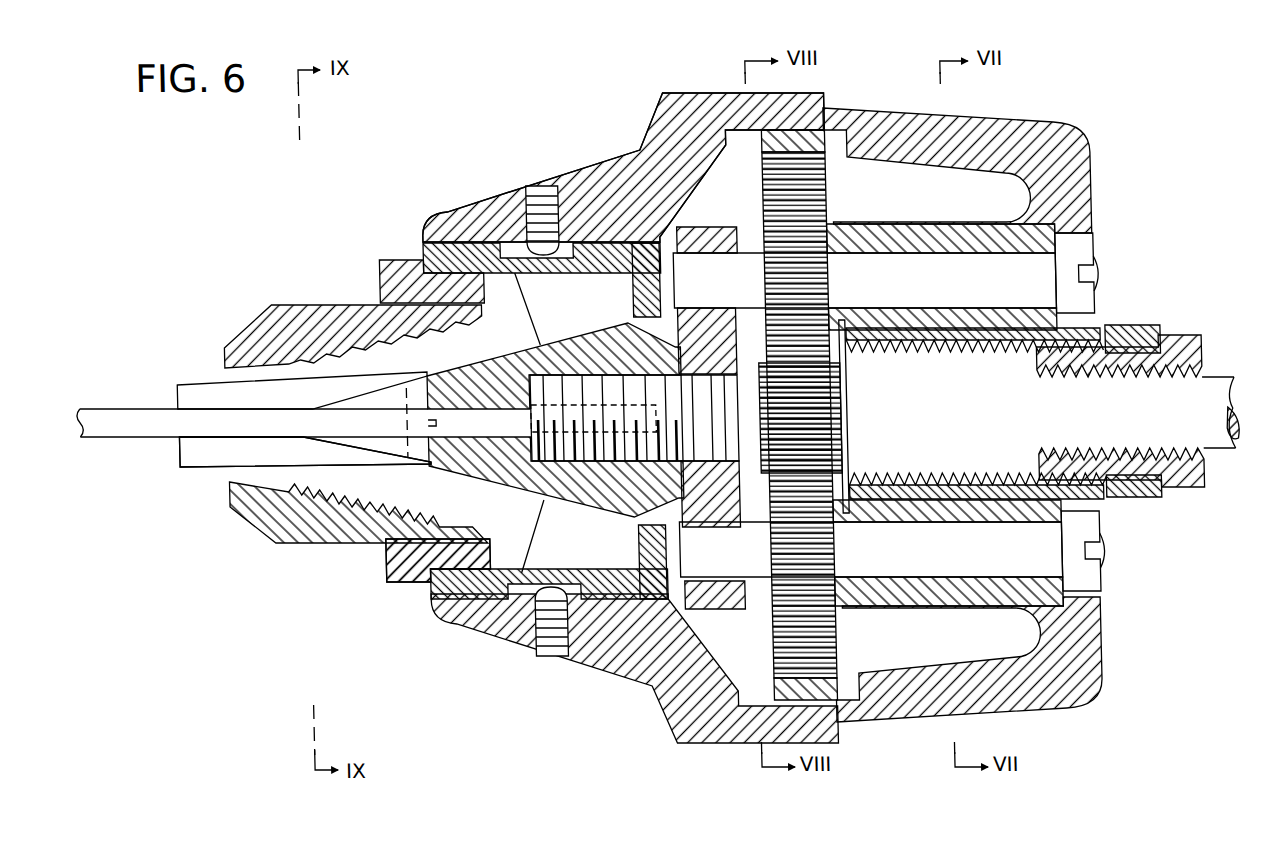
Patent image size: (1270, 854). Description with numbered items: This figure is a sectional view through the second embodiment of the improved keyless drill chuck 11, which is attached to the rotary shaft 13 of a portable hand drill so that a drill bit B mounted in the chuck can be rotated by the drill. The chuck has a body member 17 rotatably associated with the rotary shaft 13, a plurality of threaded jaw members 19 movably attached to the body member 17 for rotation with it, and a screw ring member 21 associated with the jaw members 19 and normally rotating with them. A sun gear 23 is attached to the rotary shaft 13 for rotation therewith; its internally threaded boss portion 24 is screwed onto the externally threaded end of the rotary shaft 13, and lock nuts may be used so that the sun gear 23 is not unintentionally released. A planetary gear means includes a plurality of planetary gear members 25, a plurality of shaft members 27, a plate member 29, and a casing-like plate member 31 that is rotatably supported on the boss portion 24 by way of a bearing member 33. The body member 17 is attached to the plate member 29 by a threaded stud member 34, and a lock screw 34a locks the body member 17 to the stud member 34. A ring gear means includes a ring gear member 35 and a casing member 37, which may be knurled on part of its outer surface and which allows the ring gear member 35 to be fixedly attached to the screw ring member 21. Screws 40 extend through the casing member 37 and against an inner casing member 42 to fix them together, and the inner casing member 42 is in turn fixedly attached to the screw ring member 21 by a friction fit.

The keyless drill chuck 11 is at (178, 178).
The rotary shaft 13 is at (1213, 450).
The body member 17 is at (264, 330).
The threaded jaw members 19 is at (212, 385).
The screw ring member 21 is at (385, 280).
The sun gear 23 is at (848, 446).
The boss portion 24 is at (1102, 345).
The planetary gear members 25 is at (843, 290).
The shaft members 27 is at (661, 225).
The plate member 29 is at (712, 240).
The casing-like plate member 31 is at (1080, 200).
The bearing member 33 is at (1105, 282).
The threaded stud member 34 is at (430, 590).
The lock screw 34a is at (410, 460).
The ring gear member 35 is at (821, 150).
The casing member 37 is at (688, 100).
The screws 40 is at (550, 200).
The inner casing member 42 is at (464, 248).
The drill bit B is at (143, 438).